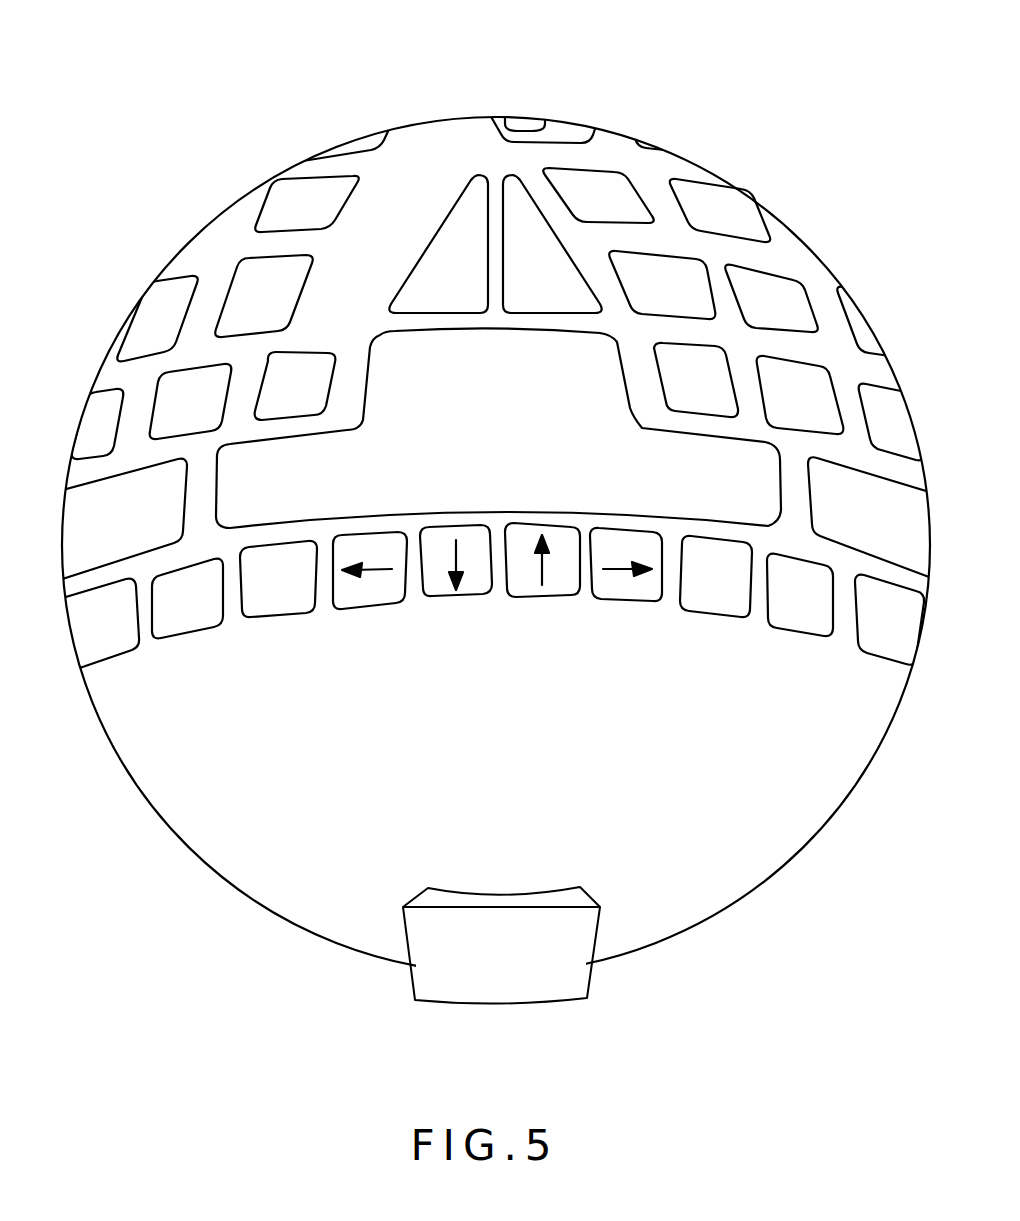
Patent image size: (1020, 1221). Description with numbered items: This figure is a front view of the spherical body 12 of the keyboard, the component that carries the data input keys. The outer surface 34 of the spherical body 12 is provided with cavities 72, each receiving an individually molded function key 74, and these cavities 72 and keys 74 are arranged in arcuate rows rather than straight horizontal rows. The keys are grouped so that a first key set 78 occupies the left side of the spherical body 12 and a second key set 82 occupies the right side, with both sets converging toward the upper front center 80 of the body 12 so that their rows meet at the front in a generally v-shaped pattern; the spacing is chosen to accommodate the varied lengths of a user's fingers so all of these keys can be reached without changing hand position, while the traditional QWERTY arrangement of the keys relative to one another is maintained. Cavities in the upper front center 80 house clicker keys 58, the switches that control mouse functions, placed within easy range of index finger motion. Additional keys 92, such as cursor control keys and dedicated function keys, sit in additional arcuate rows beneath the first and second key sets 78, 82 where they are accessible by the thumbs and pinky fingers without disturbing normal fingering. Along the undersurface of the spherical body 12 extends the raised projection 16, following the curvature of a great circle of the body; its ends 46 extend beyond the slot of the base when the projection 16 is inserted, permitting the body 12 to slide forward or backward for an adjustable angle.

The spherical body 12 is at (437, 118).
The outer surface 34 is at (794, 790).
The cavities 72 is at (236, 218).
The function keys 74 is at (281, 193).
The first key set 78 is at (212, 268).
The second key set 82 is at (790, 265).
The upper front center 80 is at (503, 242).
The clicker keys 58 is at (424, 243).
The additional keys 92 is at (337, 607).
The ends of the projection 46 is at (592, 900).
The raised projection 16 is at (592, 985).